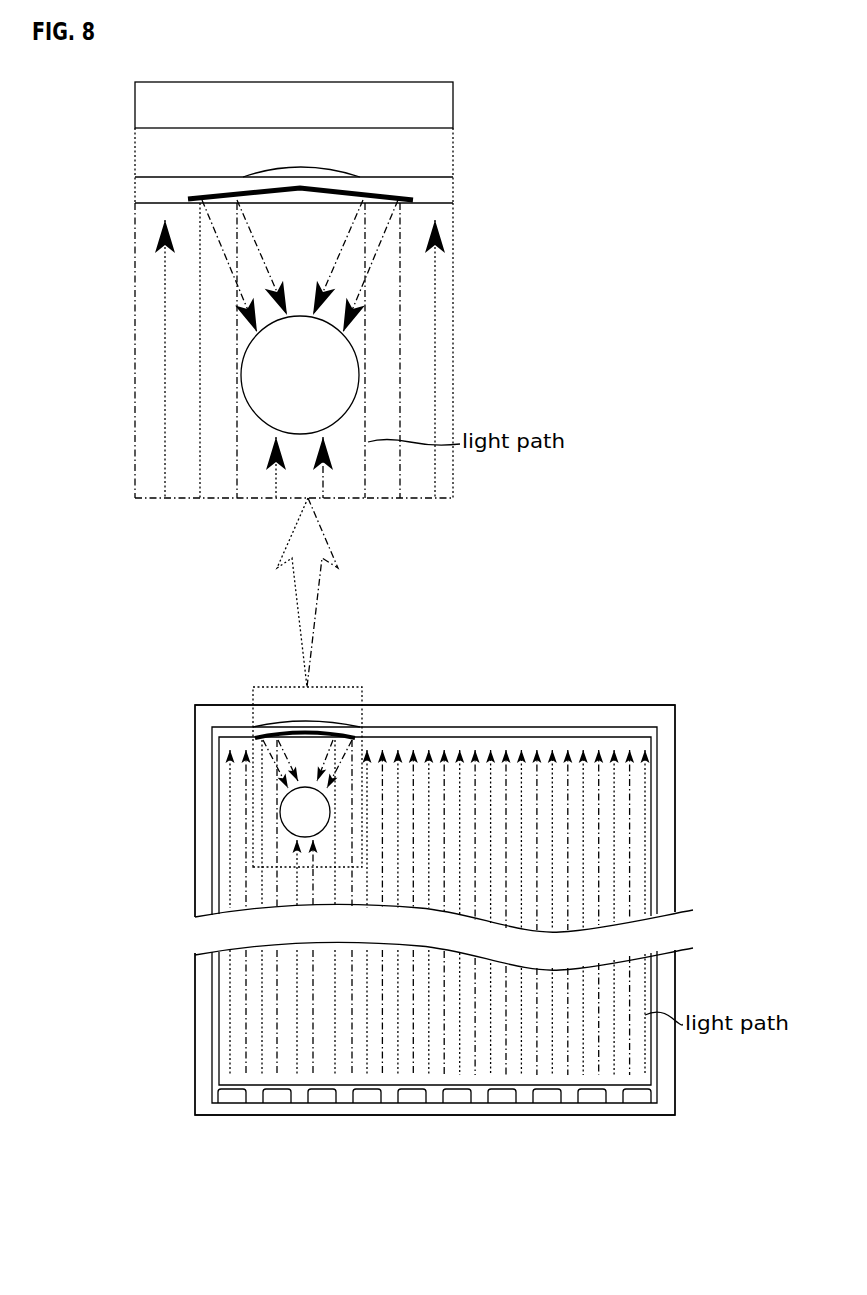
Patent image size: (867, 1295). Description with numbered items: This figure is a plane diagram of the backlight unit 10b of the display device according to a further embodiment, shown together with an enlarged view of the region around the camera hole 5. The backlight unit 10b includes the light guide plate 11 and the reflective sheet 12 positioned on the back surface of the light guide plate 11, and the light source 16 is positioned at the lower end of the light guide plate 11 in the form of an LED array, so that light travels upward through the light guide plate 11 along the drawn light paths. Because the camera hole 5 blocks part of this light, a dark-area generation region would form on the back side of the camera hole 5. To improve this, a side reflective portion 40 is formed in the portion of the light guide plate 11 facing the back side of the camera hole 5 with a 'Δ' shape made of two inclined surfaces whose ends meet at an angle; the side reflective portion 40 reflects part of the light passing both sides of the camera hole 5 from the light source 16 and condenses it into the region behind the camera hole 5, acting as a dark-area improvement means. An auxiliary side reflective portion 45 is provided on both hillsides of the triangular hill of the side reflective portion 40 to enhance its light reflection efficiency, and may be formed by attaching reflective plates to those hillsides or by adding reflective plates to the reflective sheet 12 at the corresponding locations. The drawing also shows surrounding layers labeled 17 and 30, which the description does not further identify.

The backlight unit 10b is at (214, 642).
The camera hole 5 is at (322, 370).
The light guide plate 11 is at (240, 807).
The reflective sheet 12 is at (219, 842).
The light source 16 is at (458, 1097).
The diffuser plate 17 is at (410, 142).
The bottom cover 30 is at (205, 972).
The side reflective portion 40 is at (312, 196).
The auxiliary side reflective portion 45 is at (350, 188).